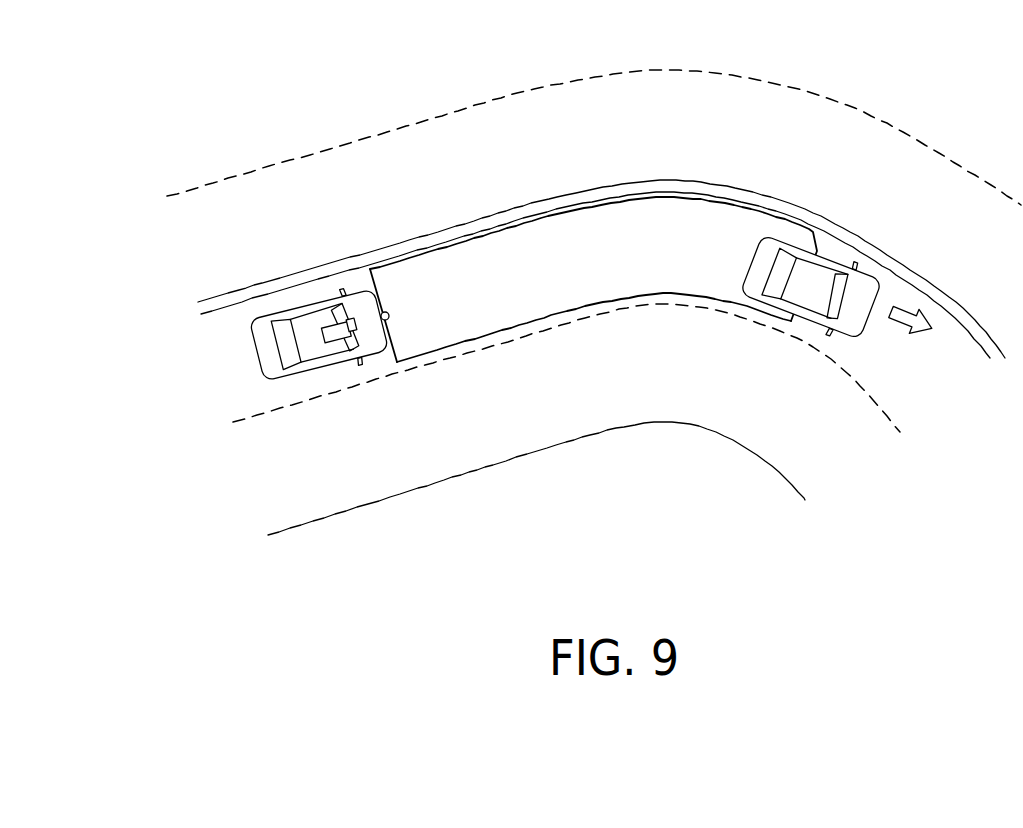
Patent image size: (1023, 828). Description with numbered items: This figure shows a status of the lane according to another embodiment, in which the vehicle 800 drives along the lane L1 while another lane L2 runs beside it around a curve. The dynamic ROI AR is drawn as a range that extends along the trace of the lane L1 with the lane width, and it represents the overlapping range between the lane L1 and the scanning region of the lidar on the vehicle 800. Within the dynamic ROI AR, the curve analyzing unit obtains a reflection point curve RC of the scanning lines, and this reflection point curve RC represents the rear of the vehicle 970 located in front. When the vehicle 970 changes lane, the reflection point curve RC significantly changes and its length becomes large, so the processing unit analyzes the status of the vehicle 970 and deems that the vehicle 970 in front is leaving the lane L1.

The vehicle 800 is at (268, 322).
The vehicle 970 is at (868, 287).
The dynamic ROI AR is at (484, 236).
The reflection point curve RC is at (745, 272).
The lane L1 is at (207, 379).
The lane L2 is at (178, 268).